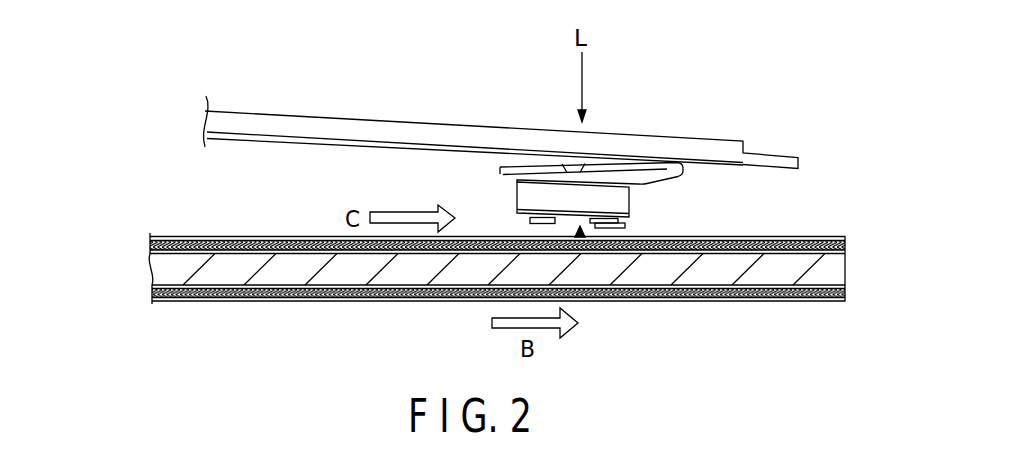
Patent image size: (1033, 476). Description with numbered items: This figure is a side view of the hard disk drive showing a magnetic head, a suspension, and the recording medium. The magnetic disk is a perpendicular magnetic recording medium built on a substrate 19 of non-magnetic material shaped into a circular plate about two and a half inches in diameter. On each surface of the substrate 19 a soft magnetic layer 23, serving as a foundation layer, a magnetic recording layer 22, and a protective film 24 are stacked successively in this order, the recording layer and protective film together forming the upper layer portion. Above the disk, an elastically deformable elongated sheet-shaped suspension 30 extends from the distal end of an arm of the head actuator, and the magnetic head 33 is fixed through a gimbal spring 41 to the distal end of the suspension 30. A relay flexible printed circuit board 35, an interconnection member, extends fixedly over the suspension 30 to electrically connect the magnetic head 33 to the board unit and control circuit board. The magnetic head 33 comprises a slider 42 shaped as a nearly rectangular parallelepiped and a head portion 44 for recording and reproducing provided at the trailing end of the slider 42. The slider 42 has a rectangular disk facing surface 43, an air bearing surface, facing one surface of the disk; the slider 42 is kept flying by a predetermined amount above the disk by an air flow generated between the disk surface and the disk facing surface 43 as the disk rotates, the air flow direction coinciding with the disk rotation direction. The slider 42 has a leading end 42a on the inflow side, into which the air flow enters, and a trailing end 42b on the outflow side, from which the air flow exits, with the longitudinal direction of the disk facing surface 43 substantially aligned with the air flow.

The substrate 19 is at (247, 278).
The magnetic recording layer 22 is at (222, 237).
The soft magnetic layer 23 is at (162, 253).
The protective film 24 is at (161, 237).
The suspension 30 is at (325, 124).
The magnetic head 33 is at (505, 201).
The relay flexible printed circuit board 35 is at (260, 144).
The gimbal spring 41 is at (512, 167).
The slider 42 is at (598, 192).
The leading end 42a is at (515, 188).
The trailing end 42b is at (628, 203).
The disk facing surface 43 is at (581, 240).
The head portion 44 is at (628, 227).